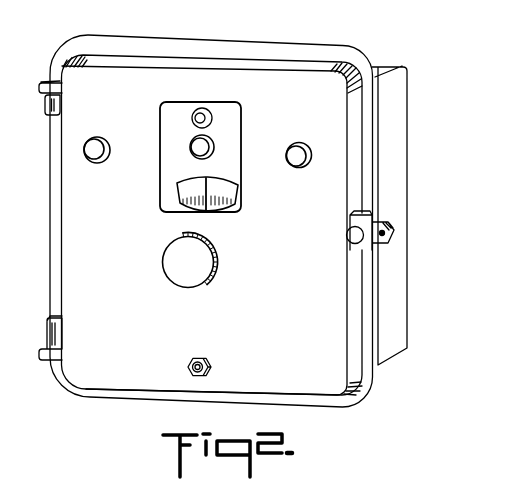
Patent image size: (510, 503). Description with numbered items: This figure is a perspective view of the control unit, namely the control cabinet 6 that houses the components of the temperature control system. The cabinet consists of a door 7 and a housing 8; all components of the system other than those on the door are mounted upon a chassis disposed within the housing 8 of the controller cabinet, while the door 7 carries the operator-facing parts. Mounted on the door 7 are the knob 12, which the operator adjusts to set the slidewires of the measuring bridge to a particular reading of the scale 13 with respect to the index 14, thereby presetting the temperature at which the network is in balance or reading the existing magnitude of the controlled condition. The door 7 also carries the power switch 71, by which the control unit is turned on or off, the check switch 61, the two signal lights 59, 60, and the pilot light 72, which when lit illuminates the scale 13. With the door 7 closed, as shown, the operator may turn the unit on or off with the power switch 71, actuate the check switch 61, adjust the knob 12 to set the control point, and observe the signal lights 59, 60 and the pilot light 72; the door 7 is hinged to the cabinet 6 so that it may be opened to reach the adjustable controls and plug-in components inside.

The control cabinet 6 is at (345, 36).
The door 7 is at (97, 380).
The housing 8 is at (398, 310).
The knob 12 is at (213, 272).
The scale 13 is at (236, 193).
The index 14 is at (204, 197).
The signal light 59 is at (300, 143).
The signal light 60 is at (97, 138).
The check switch 61 is at (191, 361).
The power switch 71 is at (206, 112).
The pilot light 72 is at (213, 146).